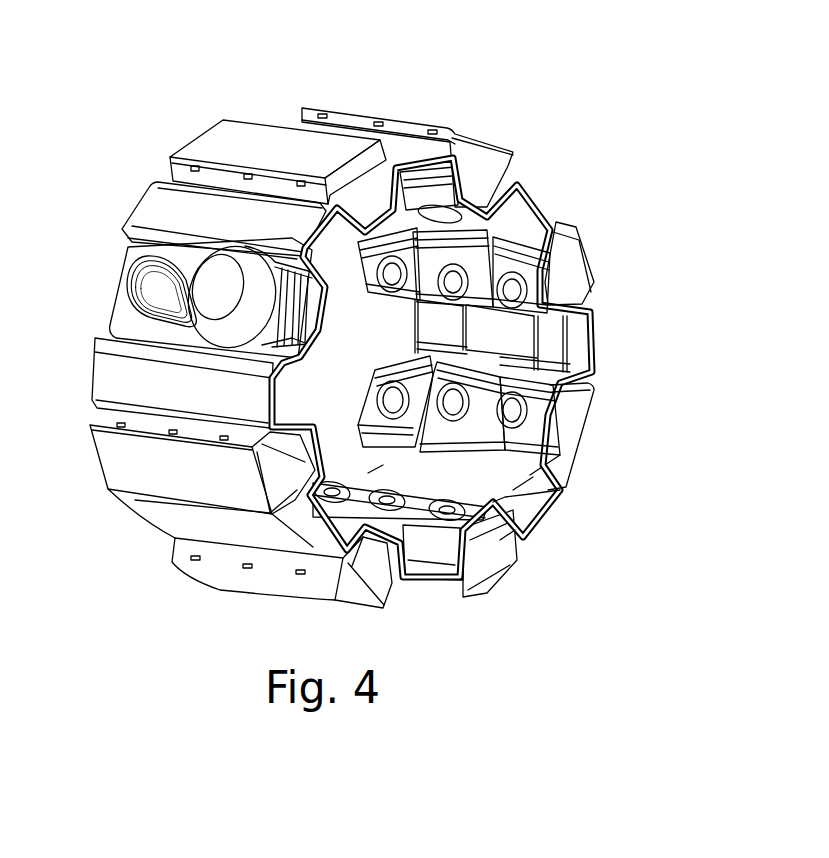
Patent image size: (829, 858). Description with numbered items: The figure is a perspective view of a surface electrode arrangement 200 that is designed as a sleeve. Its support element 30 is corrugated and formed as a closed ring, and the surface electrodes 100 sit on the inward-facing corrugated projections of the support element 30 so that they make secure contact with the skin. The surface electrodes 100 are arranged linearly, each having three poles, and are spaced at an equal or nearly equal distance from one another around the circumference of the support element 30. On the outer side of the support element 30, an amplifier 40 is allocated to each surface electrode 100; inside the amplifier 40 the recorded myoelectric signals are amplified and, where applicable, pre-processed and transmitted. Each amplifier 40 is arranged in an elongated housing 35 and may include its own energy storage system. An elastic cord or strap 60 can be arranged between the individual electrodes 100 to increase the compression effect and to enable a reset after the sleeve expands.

The surface electrode arrangement 200 is at (553, 130).
The elongated housing 35 is at (205, 133).
The support element 30 is at (532, 197).
The amplifier 40 is at (598, 238).
The surface electrode 100 is at (515, 290).
The strap 60 is at (532, 495).